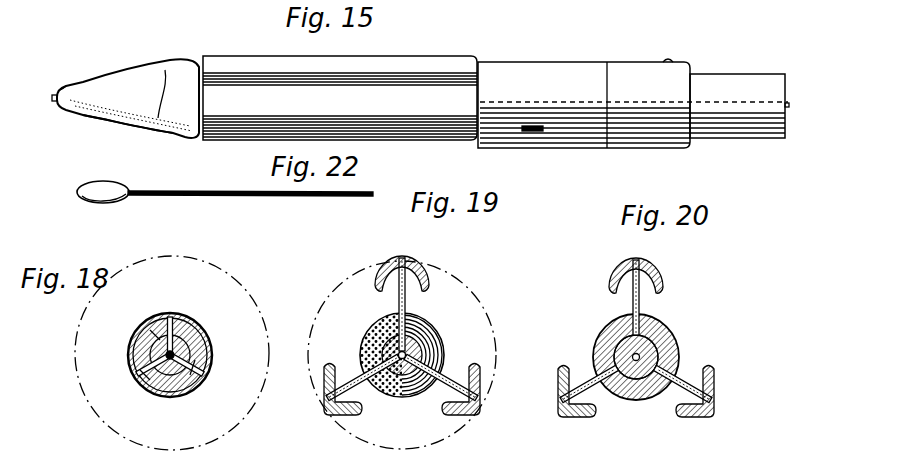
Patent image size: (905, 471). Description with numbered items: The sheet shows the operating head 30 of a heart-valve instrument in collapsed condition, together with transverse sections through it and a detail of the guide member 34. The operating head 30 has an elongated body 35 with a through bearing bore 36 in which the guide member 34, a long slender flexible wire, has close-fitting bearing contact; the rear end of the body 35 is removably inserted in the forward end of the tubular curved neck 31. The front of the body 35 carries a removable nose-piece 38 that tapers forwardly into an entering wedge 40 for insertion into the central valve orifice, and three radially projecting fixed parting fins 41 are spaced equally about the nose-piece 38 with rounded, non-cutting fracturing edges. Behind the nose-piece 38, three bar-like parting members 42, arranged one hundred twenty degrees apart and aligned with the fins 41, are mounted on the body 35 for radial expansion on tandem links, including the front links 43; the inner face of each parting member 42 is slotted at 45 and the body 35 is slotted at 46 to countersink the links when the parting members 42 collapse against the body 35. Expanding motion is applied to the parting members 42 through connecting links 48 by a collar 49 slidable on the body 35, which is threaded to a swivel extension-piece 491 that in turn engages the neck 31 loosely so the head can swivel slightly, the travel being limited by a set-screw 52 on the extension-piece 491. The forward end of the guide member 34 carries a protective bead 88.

In FIG. 15, the operating head 30 is at (623, 60).
In FIG. 18, the operating head 30 is at (220, 328).
In FIG. 19, the operating head 30 is at (447, 330).
In FIG. 20, the operating head 30 is at (682, 340).
In FIG. 15, the tubular curved neck 31 is at (758, 136).
In FIG. 15, the guide member 34 is at (60, 90).
In FIG. 22, the guide member 34 is at (300, 196).
In FIG. 18, the guide member 34 is at (180, 396).
In FIG. 19, the guide member 34 is at (375, 346).
In FIG. 20, the guide member 34 is at (612, 332).
In FIG. 18, the elongated body 35 is at (205, 330).
In FIG. 19, the elongated body 35 is at (440, 350).
In FIG. 20, the elongated body 35 is at (598, 352).
In FIG. 18, the bearing bore 36 is at (160, 385).
In FIG. 19, the bearing bore 36 is at (398, 362).
In FIG. 20, the bearing bore 36 is at (620, 398).
In FIG. 15, the nose-piece 38 is at (115, 125).
In FIG. 15, the entering wedge 40 is at (82, 82).
In FIG. 15, the parting fins 41 is at (165, 70).
In FIG. 15, the parting members 42 is at (427, 112).
In FIG. 18, the parting members 42 is at (160, 318).
In FIG. 19, the parting members 42 is at (410, 262).
In FIG. 20, the parting members 42 is at (622, 272).
In FIG. 18, the front links 43 is at (135, 345).
In FIG. 19, the front links 43 is at (420, 300).
In FIG. 18, the slot 45 is at (185, 318).
In FIG. 19, the slot 45 is at (380, 268).
In FIG. 20, the slot 45 is at (645, 266).
In FIG. 18, the slot 46 is at (215, 320).
In FIG. 19, the slot 46 is at (416, 332).
In FIG. 15, the connecting links 48 is at (527, 132).
In FIG. 20, the connecting links 48 is at (640, 296).
In FIG. 15, the collar 49 is at (571, 72).
In FIG. 20, the collar 49 is at (639, 402).
In FIG. 15, the swivel extension-piece 491 is at (662, 145).
In FIG. 15, the set-screw 52 is at (668, 60).
In FIG. 22, the protective bead 88 is at (100, 203).